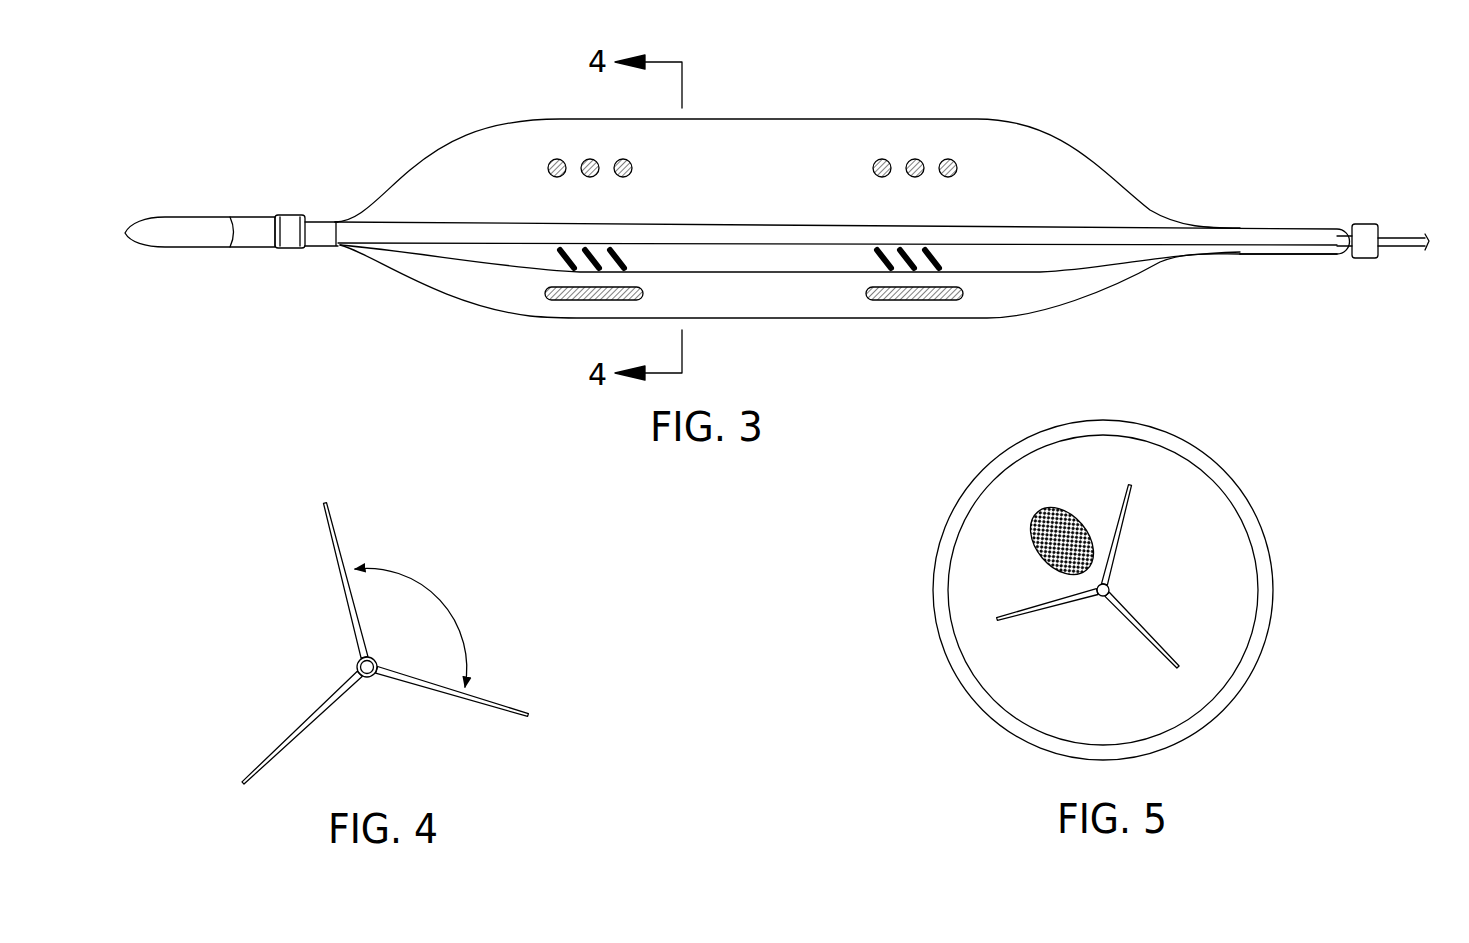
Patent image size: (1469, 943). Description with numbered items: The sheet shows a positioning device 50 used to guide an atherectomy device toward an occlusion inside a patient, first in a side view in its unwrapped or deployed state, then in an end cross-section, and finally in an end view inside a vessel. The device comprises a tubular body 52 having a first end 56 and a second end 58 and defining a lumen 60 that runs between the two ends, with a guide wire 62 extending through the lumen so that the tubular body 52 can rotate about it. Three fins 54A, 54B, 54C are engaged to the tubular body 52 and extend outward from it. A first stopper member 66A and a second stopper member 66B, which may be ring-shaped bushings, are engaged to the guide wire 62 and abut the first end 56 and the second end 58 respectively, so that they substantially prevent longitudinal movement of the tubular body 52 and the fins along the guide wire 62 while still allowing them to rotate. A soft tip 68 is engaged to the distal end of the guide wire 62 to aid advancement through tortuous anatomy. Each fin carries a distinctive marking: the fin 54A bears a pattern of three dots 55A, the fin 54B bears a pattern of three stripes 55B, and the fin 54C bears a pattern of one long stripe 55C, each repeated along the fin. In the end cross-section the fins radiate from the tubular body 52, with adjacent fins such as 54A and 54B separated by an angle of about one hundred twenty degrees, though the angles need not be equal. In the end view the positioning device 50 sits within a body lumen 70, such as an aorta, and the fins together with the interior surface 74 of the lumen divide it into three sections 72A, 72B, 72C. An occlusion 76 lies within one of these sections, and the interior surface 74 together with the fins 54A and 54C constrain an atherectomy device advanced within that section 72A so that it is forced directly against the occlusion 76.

In FIG. 3, the positioning device 50 is at (958, 66).
In FIG. 4, the positioning device 50 is at (455, 558).
In FIG. 3, the tubular body 52 is at (330, 228).
In FIG. 4, the tubular body 52 is at (355, 655).
In FIG. 3, the fin 54A is at (795, 181).
In FIG. 4, the fin 54A is at (326, 502).
In FIG. 5, the fin 54A is at (1117, 501).
In FIG. 3, the fin 54B is at (990, 263).
In FIG. 4, the fin 54B is at (493, 697).
In FIG. 5, the fin 54B is at (1152, 638).
In FIG. 3, the fin 54C is at (800, 303).
In FIG. 4, the fin 54C is at (317, 706).
In FIG. 5, the fin 54C is at (1013, 603).
In FIG. 3, the pattern of three dots 55A is at (575, 150).
In FIG. 3, the pattern of three stripes 55B is at (552, 262).
In FIG. 3, the pattern of one long stripe 55C is at (580, 312).
In FIG. 3, the first end 56 is at (330, 250).
In FIG. 3, the second end 58 is at (1328, 256).
In FIG. 4, the lumen 60 is at (380, 677).
In FIG. 3, the guide wire 62 is at (1417, 248).
In FIG. 3, the first stopper member 66A is at (293, 247).
In FIG. 3, the second stopper member 66B is at (1350, 227).
In FIG. 3, the tip 68 is at (168, 216).
In FIG. 5, the body lumen 70 is at (1216, 470).
In FIG. 5, the section 72A is at (1087, 485).
In FIG. 5, the section 72B is at (1194, 575).
In FIG. 5, the section 72C is at (1099, 670).
In FIG. 5, the interior surface 74 is at (1070, 740).
In FIG. 5, the occlusion 76 is at (1049, 521).